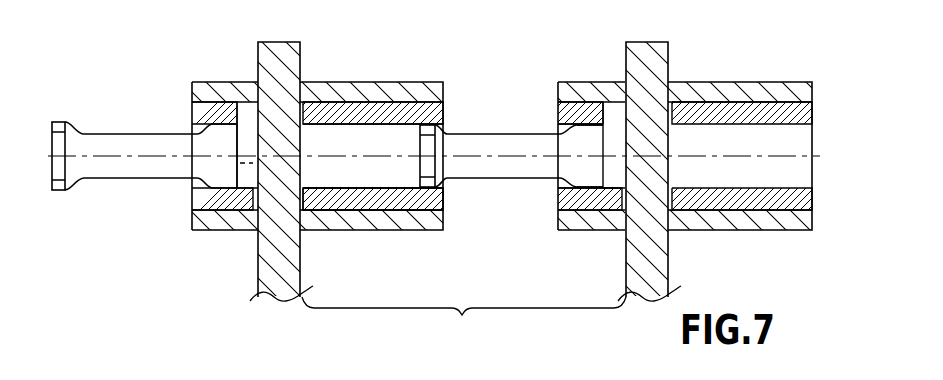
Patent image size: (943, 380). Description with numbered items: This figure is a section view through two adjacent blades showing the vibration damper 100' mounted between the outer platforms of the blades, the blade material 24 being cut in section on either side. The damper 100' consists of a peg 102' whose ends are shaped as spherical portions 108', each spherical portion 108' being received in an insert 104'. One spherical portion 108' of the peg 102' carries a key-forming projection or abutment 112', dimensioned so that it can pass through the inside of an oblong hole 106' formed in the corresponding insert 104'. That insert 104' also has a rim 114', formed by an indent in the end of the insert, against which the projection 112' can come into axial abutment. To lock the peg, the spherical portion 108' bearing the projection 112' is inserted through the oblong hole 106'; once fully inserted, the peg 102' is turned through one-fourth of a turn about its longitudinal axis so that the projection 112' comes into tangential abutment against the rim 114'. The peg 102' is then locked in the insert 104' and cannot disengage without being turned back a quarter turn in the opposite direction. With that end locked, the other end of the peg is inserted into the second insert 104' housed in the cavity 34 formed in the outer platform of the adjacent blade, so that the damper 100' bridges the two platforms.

The housing 24 is at (233, 78).
The cavity 34 is at (351, 200).
The vibration damper 100' is at (464, 319).
The peg 102' is at (519, 106).
The insert 104' is at (530, 149).
The oblong hole 106' is at (462, 132).
The spherical portion 108' is at (511, 112).
The projection 112' is at (471, 190).
The rim 114' is at (602, 94).